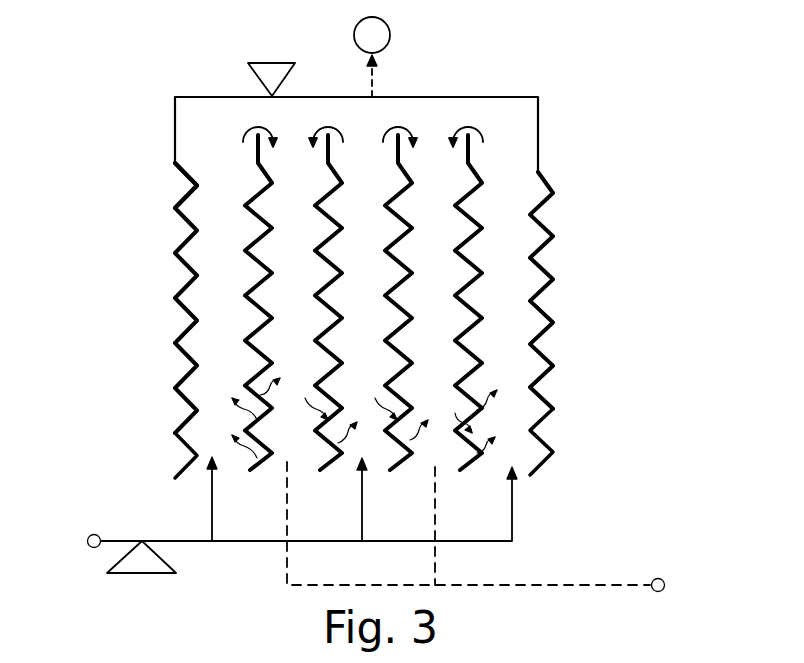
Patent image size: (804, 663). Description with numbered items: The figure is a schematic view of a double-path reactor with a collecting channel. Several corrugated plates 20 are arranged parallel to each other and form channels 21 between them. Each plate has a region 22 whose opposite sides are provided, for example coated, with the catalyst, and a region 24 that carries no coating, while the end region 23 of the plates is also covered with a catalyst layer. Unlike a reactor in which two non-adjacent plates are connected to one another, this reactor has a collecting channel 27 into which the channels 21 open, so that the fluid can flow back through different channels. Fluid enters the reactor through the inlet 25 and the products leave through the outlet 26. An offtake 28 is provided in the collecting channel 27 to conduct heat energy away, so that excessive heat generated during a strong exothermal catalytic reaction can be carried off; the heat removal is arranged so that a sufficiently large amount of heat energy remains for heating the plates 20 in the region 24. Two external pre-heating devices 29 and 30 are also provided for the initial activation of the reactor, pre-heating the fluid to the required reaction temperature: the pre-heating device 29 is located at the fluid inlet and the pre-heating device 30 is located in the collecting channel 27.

The plate 20 is at (547, 445).
The channel 21 is at (527, 410).
The region 22 is at (158, 272).
The end region 23 is at (177, 208).
The region 24 is at (158, 434).
The inlet 25 is at (87, 541).
The outlet 26 is at (665, 585).
The collecting channel 27 is at (437, 112).
The offtake 28 is at (388, 28).
The pre-heating device 29 is at (154, 573).
The pre-heating device 30 is at (270, 63).